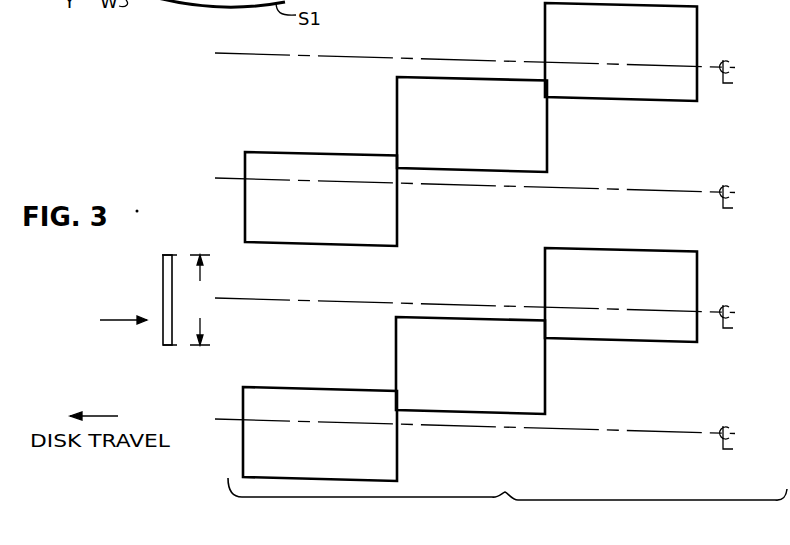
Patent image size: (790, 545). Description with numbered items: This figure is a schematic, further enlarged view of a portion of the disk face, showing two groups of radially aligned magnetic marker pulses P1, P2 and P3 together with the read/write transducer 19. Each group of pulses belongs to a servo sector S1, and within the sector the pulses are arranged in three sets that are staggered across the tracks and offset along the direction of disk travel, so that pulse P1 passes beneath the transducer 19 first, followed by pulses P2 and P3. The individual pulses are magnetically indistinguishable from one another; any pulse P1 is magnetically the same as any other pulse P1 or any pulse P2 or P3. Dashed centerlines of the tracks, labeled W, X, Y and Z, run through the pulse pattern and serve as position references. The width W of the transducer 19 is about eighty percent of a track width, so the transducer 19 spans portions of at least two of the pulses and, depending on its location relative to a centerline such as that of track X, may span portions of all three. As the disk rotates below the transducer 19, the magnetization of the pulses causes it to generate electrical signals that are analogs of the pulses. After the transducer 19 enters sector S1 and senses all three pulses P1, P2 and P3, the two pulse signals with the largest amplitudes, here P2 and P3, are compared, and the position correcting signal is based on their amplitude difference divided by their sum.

The read/write transducer 19 is at (163, 290).
The first set of marker pulses P1 is at (320, 316).
The second set of marker pulses P2 is at (471, 245).
The third set of marker pulses P3 is at (621, 172).
The servo sector S1 is at (507, 504).
The width of the transducer W is at (487, 434).
The track centerline x X is at (486, 313).
The track centerline y Y is at (486, 193).
The track centerline z Z is at (486, 68).